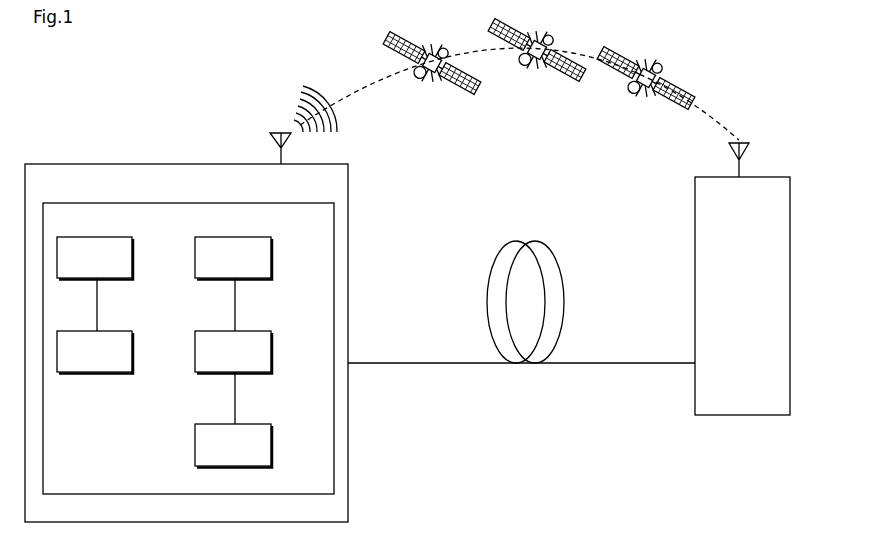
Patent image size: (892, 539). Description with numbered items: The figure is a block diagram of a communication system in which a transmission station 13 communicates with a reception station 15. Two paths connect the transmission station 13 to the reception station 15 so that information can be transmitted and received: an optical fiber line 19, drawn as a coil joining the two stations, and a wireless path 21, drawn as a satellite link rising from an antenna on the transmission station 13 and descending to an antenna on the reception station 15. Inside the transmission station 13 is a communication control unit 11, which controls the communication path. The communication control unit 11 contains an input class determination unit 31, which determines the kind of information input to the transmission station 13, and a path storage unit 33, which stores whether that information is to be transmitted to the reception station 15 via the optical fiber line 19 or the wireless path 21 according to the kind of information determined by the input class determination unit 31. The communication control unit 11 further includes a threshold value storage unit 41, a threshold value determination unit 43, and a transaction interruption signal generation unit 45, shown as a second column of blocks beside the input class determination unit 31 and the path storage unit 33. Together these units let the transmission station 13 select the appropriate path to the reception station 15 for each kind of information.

The communication control unit 11 is at (213, 214).
The transmission station 13 is at (342, 183).
The reception station 15 is at (743, 183).
The optical fiber line 19 is at (565, 305).
The wireless path 21 is at (713, 116).
The input class determination unit 31 is at (128, 264).
The path storage unit 33 is at (128, 359).
The threshold value storage unit 41 is at (264, 264).
The threshold value determination unit 43 is at (264, 359).
The transaction interruption signal generation unit 45 is at (268, 458).